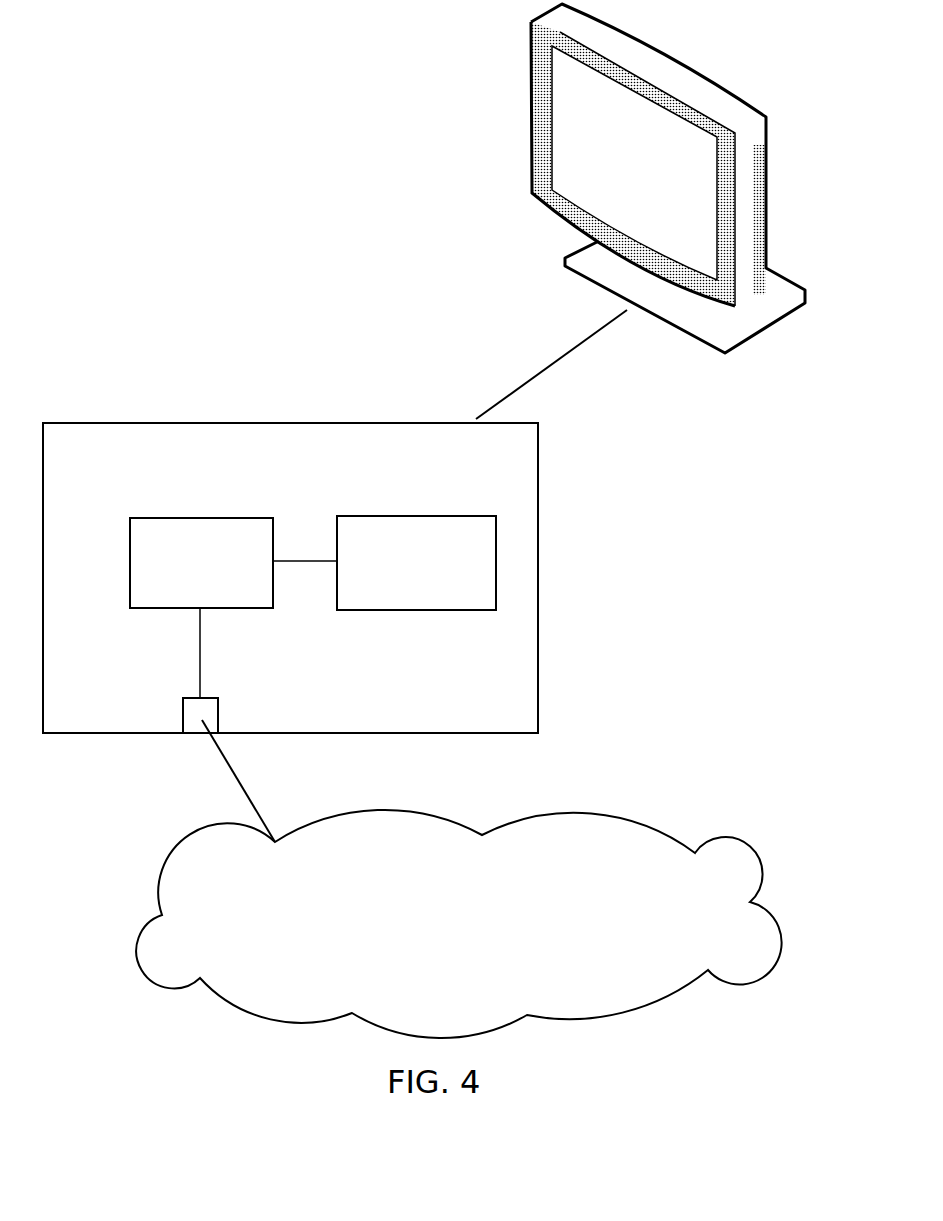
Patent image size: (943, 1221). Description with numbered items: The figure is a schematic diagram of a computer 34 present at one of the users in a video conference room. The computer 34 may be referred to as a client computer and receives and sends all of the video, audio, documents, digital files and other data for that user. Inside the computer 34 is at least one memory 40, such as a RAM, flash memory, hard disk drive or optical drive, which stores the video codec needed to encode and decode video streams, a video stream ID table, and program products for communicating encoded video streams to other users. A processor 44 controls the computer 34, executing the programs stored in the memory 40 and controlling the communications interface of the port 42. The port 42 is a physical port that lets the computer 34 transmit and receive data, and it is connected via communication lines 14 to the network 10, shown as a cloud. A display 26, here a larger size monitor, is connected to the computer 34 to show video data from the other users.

The display 26 is at (530, 98).
The computer 34 is at (538, 453).
The processor 44 is at (140, 517).
The memory 40 is at (338, 525).
The port 42 is at (193, 697).
The communication lines 14 is at (235, 788).
The network 10 is at (510, 822).